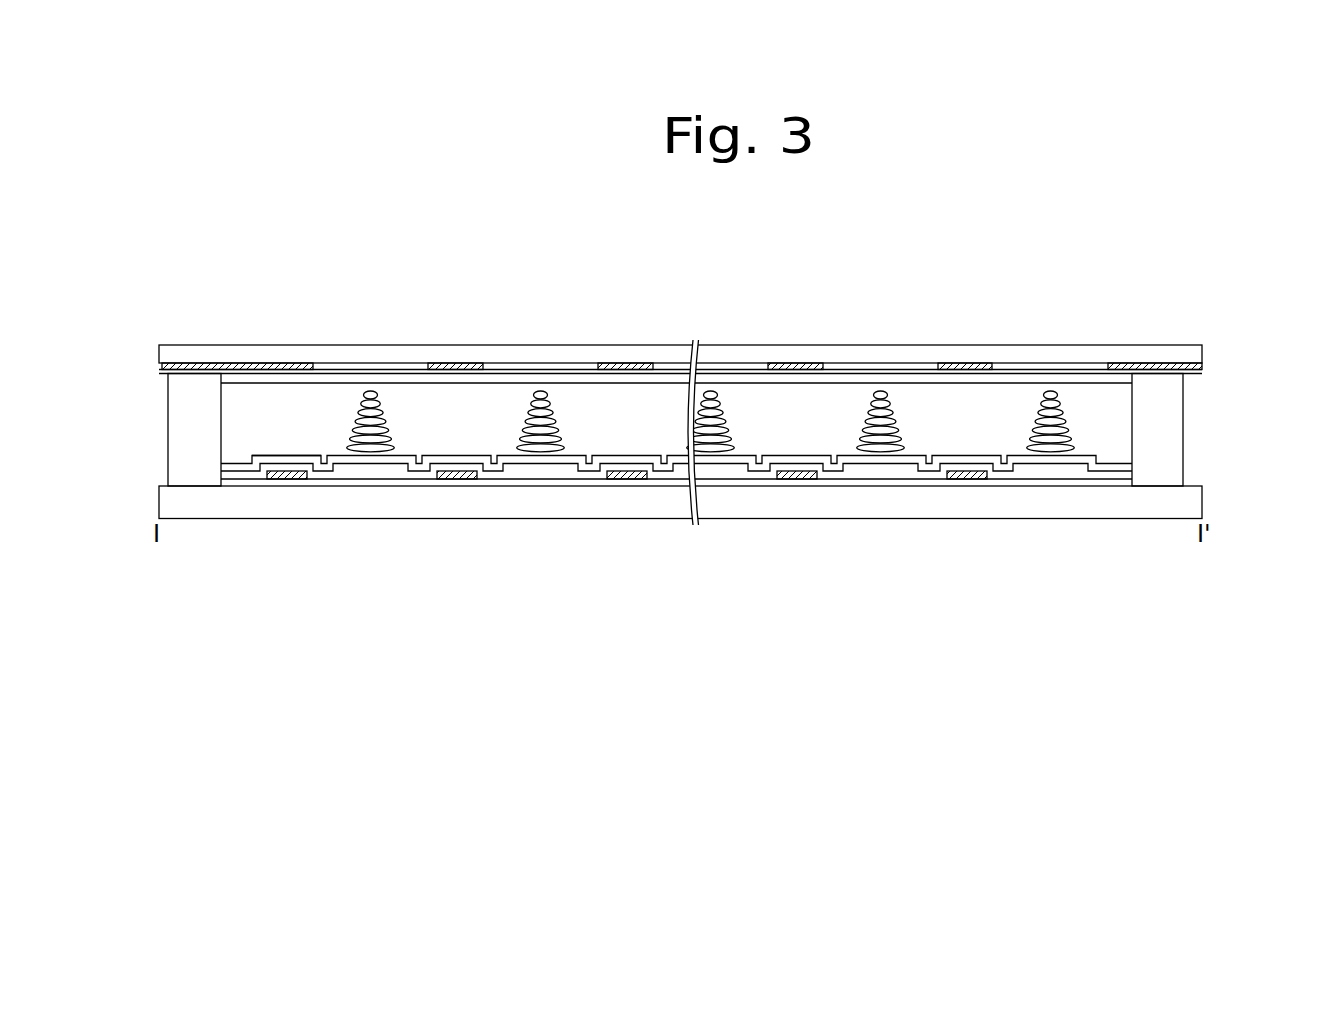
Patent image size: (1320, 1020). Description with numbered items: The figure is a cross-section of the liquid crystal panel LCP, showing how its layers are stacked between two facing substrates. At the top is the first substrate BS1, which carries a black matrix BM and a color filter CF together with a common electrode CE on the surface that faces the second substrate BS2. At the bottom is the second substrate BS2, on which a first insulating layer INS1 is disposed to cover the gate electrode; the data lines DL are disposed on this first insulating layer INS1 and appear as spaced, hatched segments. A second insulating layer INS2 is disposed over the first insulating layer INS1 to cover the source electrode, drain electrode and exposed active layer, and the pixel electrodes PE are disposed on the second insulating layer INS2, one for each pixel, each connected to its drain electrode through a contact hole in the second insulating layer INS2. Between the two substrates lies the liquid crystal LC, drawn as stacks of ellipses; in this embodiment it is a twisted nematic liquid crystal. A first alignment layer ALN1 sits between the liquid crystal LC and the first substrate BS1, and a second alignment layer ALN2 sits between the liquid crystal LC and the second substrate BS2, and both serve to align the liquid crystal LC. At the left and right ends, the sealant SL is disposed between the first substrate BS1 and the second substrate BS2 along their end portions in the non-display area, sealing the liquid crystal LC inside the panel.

The liquid crystal panel LCP is at (731, 403).
The first substrate BS1 is at (1212, 350).
The black matrix BM is at (968, 366).
The color filter CF is at (1057, 372).
The common electrode CE is at (888, 376).
The first alignment layer ALN1 is at (738, 382).
The sealant SL is at (1172, 435).
The liquid crystal LC is at (630, 438).
The pixel electrode PE is at (723, 467).
The second alignment layer ALN2 is at (800, 459).
The second insulating layer INS2 is at (882, 475).
The data line DL is at (963, 479).
The first insulating layer INS1 is at (1058, 483).
The second substrate BS2 is at (1212, 501).